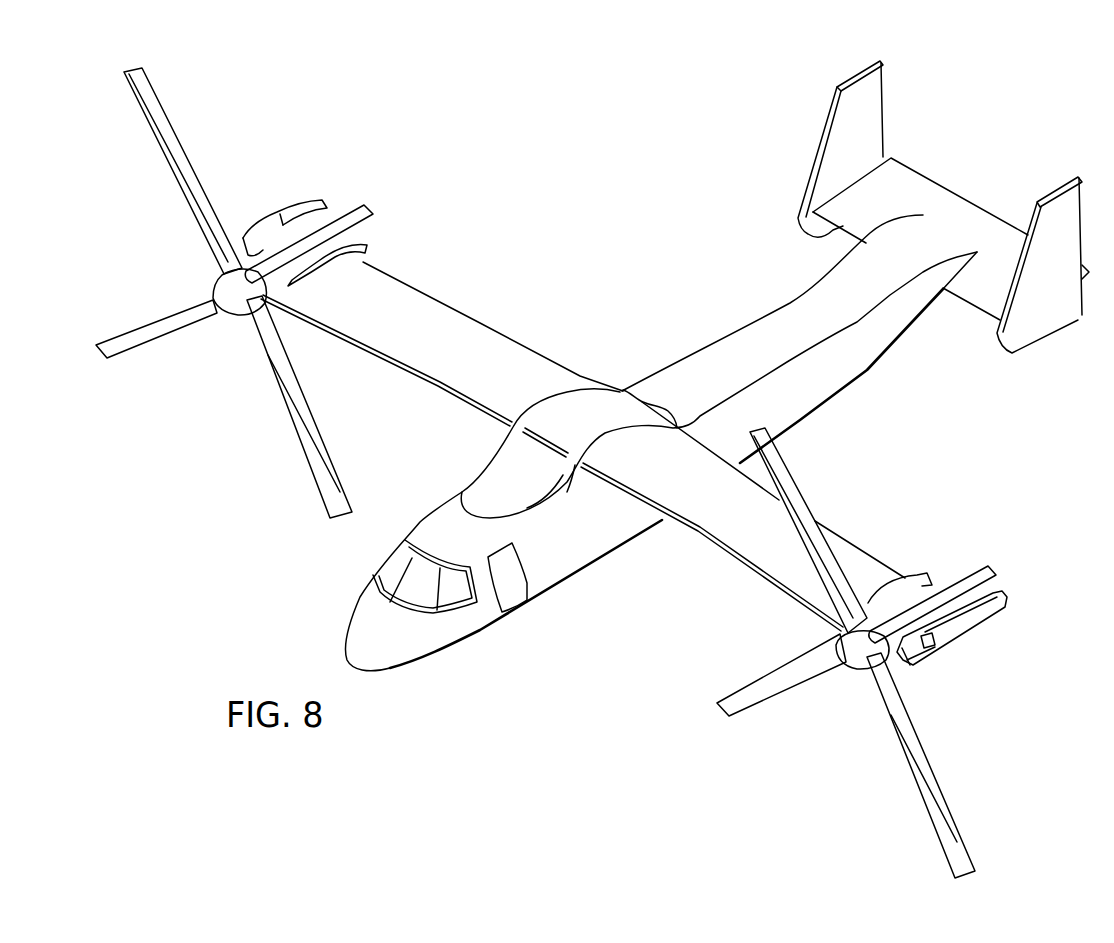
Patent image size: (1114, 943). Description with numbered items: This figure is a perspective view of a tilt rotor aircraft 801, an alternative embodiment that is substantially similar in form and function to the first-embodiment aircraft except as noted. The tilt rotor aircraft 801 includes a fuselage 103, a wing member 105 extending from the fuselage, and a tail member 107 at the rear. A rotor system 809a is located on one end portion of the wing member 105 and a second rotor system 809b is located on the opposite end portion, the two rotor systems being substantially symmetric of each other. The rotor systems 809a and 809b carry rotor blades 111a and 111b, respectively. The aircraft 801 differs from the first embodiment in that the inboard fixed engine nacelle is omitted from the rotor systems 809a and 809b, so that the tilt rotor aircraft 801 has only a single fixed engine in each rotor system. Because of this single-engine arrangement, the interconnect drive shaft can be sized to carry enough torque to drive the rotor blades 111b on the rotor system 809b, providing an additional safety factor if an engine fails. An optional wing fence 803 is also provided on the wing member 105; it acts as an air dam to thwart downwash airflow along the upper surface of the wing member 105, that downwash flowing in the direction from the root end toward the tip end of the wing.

The tilt rotor aircraft 801 is at (296, 601).
The fuselage 103 is at (438, 652).
The wing member 105 is at (453, 320).
The tail member 107 is at (955, 202).
The rotor blades 111a is at (760, 678).
The rotor blades 111b is at (132, 324).
The wing fence 803 is at (365, 252).
The rotor system 809a is at (812, 721).
The rotor system 809b is at (201, 355).